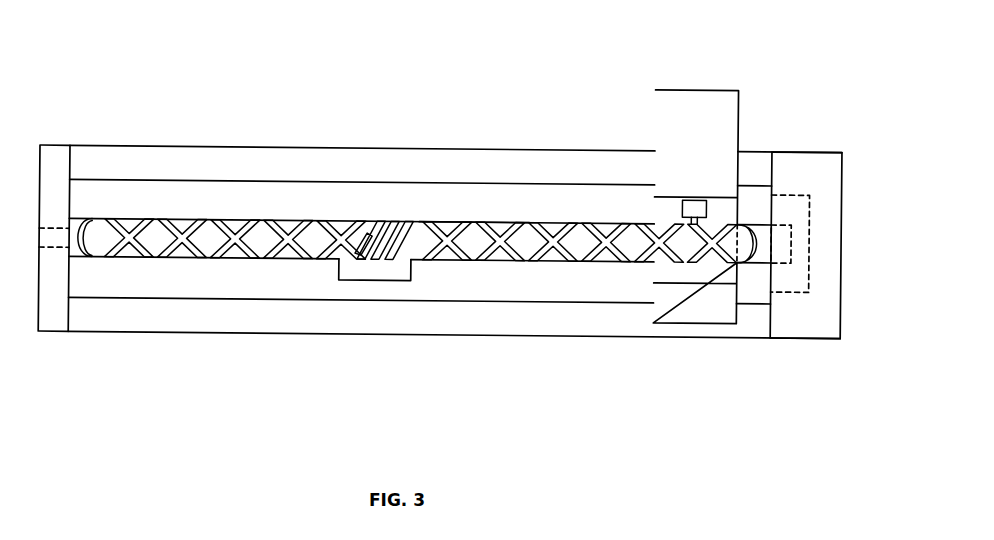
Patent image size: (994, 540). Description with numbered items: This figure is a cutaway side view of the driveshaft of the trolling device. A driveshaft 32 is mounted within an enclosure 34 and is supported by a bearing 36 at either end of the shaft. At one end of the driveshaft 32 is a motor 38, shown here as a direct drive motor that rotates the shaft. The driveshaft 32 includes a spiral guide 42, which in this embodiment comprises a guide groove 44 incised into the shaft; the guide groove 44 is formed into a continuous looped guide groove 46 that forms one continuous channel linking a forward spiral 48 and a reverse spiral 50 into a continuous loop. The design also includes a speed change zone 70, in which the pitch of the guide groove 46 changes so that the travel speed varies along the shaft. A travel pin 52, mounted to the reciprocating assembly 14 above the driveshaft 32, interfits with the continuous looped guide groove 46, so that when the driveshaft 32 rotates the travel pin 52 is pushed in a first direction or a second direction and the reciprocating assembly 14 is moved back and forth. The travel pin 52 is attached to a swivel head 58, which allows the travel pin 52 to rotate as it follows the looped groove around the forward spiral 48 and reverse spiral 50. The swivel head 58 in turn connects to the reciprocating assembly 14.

The reciprocating assembly 14 is at (636, 87).
The driveshaft 32 is at (86, 230).
The enclosure 34 is at (214, 163).
The bearing 36 is at (58, 238).
The motor 38 is at (797, 283).
The spiral guide 42 is at (200, 257).
The guide groove 44 is at (215, 255).
The continuous looped guide groove 46 is at (510, 230).
The forward spiral 48 is at (597, 257).
The reverse spiral 50 is at (483, 223).
The travel pin 52 is at (692, 157).
The swivel head 58 is at (707, 213).
The speed change zone 70 is at (380, 265).